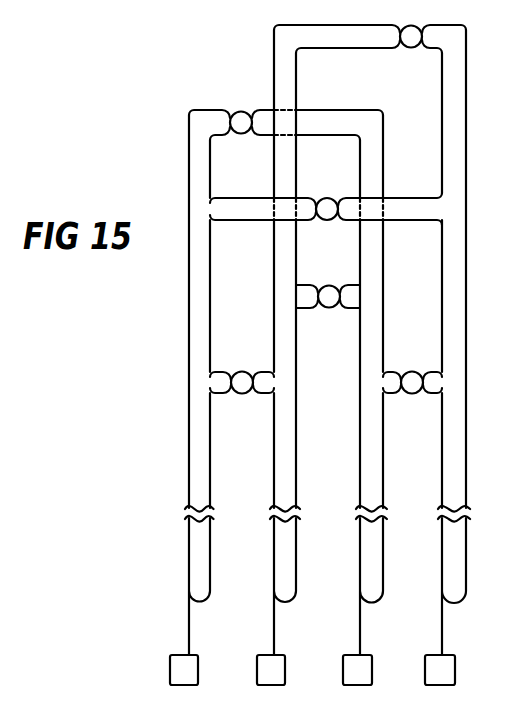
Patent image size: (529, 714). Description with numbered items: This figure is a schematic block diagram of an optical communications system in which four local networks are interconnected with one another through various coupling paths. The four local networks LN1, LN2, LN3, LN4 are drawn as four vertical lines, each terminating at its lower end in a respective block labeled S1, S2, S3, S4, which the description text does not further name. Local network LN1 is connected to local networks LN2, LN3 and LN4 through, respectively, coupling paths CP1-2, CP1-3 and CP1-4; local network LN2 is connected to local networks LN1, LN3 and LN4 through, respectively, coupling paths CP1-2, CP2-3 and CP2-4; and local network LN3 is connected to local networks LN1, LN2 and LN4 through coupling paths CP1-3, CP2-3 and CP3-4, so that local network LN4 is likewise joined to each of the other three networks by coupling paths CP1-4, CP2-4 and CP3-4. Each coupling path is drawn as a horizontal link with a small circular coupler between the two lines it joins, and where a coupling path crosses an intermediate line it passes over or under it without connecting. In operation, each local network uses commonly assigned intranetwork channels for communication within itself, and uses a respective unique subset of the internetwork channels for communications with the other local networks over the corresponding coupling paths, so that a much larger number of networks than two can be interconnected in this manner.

The coupling path CP1-2 is at (242, 397).
The coupling path CP1-3 is at (286, 136).
The coupling path CP1-4 is at (326, 221).
The coupling path CP2-3 is at (328, 311).
The coupling path CP2-4 is at (370, 49).
The coupling path CP3-4 is at (412, 397).
The local network LN1 is at (189, 461).
The local network LN2 is at (274, 461).
The local network LN3 is at (360, 461).
The local network LN4 is at (442, 461).
The station 1 S1 is at (170, 668).
The station 2 S2 is at (257, 668).
The station 3 S3 is at (343, 668).
The station 4 S4 is at (425, 668).